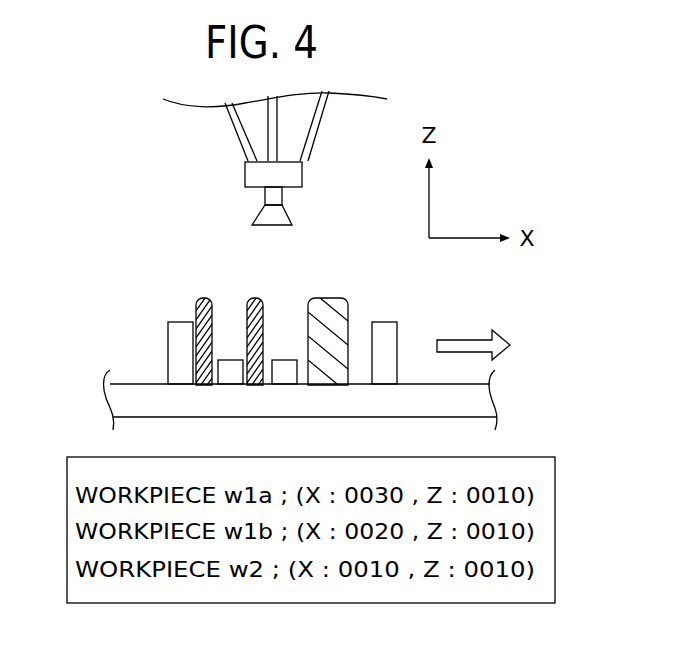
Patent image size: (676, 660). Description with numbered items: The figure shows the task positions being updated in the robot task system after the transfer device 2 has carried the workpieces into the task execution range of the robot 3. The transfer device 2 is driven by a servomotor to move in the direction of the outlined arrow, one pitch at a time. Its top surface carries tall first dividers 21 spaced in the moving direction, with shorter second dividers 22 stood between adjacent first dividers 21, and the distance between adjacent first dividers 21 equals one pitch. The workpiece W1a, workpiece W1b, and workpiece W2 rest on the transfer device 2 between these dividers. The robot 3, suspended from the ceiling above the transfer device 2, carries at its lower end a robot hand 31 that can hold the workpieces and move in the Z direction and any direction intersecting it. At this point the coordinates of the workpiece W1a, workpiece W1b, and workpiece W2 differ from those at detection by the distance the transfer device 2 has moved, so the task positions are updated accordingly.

The transfer device 2 is at (134, 384).
The robot 3 is at (215, 169).
The robot hand 31 is at (281, 207).
The first dividers 21 is at (182, 321).
The second dividers 22 is at (237, 359).
The workpiece W1a is at (204, 297).
The workpiece W1b is at (256, 297).
The workpiece W2 is at (332, 297).